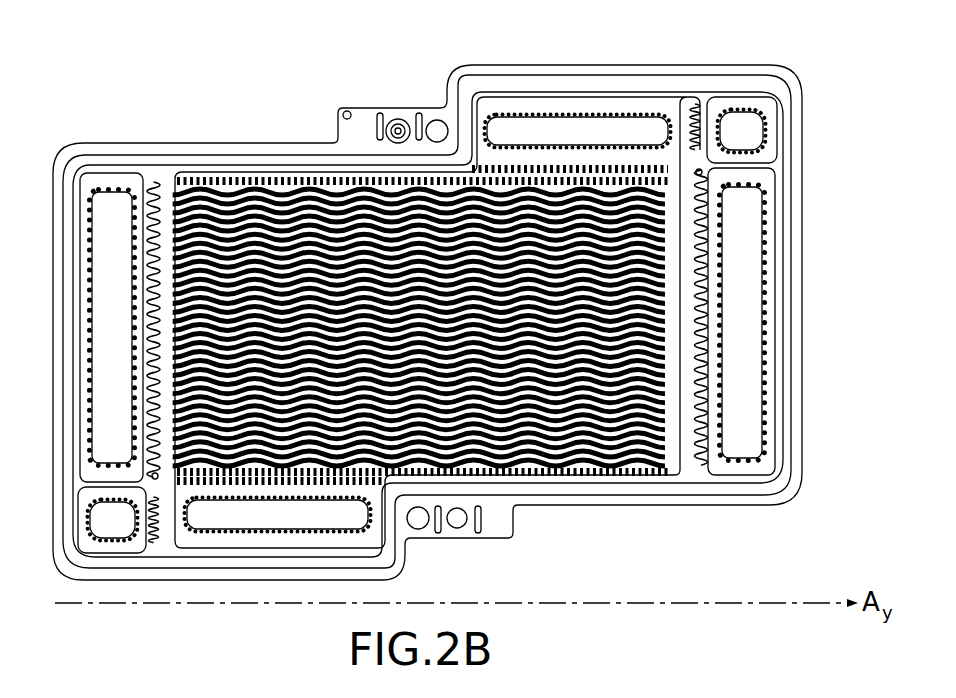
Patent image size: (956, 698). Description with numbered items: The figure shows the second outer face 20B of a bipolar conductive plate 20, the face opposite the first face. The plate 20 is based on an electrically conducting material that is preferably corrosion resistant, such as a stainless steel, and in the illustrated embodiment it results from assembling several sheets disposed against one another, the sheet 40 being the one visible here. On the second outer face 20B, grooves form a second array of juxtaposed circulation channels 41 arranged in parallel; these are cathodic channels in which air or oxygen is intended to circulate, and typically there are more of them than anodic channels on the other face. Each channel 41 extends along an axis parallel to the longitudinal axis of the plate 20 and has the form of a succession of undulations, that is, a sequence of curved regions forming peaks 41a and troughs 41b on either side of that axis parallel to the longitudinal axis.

The bipolar conductive plate 20 is at (707, 67).
The second outer face 20B is at (643, 485).
The sheet 40 is at (123, 168).
The fluidic channels 41 is at (420, 292).
The peaks 41a is at (537, 192).
The troughs 41b is at (376, 198).